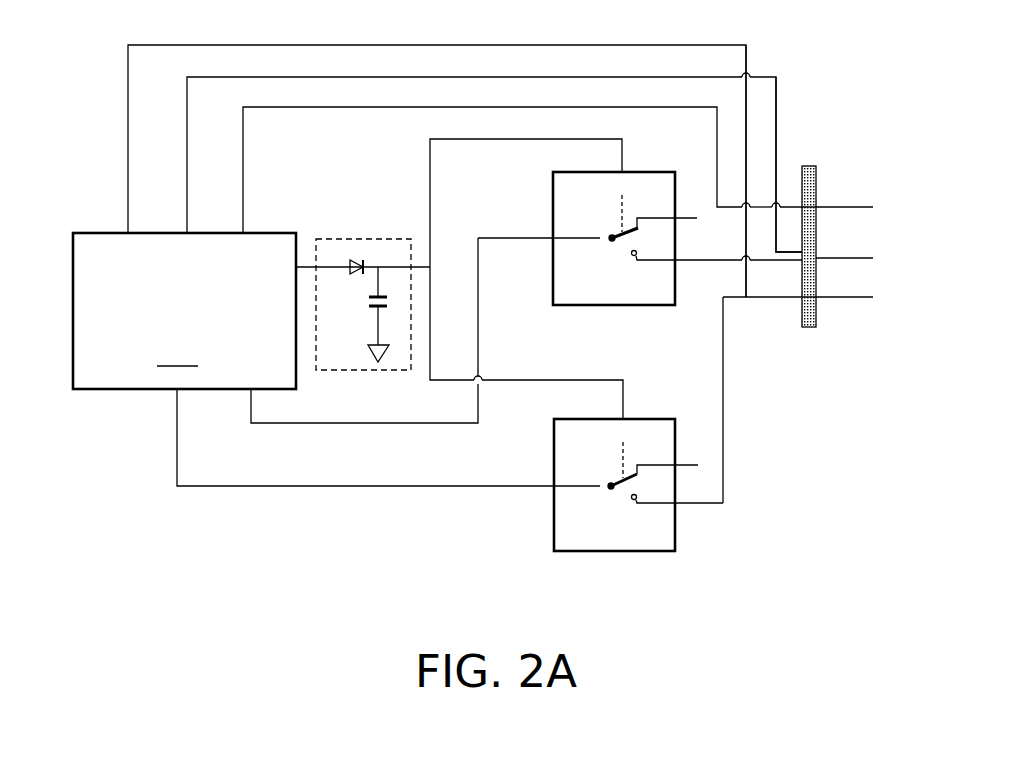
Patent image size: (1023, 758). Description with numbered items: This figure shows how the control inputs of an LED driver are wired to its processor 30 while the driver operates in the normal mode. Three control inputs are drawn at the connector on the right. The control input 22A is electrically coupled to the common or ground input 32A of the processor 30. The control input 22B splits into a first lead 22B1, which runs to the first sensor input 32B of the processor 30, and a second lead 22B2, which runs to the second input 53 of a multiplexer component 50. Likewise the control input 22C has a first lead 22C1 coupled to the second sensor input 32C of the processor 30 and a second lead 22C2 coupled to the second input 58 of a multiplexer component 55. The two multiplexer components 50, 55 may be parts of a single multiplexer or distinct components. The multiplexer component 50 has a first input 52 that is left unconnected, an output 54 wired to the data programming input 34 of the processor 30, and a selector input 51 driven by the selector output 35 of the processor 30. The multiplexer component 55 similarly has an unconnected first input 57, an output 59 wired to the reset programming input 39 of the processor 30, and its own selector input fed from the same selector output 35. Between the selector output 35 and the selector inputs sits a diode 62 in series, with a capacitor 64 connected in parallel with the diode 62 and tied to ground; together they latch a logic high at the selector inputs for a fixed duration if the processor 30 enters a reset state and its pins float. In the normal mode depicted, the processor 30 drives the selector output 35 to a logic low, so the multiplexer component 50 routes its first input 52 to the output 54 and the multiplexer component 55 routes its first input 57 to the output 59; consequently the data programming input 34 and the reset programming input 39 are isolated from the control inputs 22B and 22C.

The processor 30 is at (96, 233).
The common or ground input 32A is at (246, 233).
The first sensor input 32B is at (190, 233).
The second sensor input 32C is at (133, 233).
The data programming input 34 is at (243, 389).
The selector output 35 is at (298, 264).
The reset programming input 39 is at (170, 389).
The multiplexer component 50 is at (618, 305).
The selector input 51 is at (622, 172).
The first input 52 is at (675, 218).
The second input 53 is at (676, 261).
The output 54 is at (553, 238).
The multiplexer component 55 is at (615, 551).
The first input 57 is at (676, 465).
The second input 58 is at (676, 503).
The output 59 is at (554, 486).
The diode 62 is at (360, 263).
The capacitor 64 is at (365, 310).
The control input 22A is at (860, 207).
The control input 22B is at (860, 258).
The control input 22C is at (860, 297).
The first lead 22B1 is at (776, 100).
The second lead 22B2 is at (718, 262).
The first lead 22C1 is at (746, 55).
The second lead 22C2 is at (723, 440).